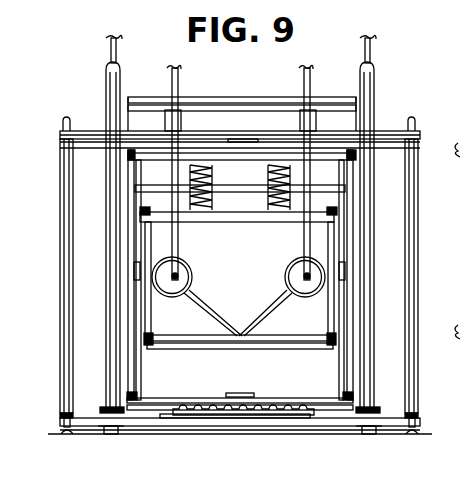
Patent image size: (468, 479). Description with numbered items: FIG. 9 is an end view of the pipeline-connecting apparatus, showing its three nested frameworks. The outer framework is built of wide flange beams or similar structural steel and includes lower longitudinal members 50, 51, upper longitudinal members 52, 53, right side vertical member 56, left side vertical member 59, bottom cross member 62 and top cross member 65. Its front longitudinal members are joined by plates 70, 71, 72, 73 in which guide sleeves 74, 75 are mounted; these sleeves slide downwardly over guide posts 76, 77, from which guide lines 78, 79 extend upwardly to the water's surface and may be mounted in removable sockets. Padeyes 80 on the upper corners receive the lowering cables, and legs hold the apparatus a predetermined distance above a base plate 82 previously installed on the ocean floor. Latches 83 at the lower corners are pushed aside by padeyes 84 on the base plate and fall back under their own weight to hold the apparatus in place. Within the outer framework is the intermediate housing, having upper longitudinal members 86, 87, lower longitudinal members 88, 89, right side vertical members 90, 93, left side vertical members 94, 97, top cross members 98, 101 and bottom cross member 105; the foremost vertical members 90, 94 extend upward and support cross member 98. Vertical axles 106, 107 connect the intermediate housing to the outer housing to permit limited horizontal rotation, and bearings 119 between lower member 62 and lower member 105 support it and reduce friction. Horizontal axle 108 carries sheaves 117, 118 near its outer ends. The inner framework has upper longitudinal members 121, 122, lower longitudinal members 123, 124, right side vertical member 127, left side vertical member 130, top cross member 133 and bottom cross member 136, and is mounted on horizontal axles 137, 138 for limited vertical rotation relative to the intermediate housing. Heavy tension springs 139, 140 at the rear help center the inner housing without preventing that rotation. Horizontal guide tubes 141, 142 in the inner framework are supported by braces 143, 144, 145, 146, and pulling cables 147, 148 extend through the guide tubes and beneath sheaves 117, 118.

The lower longitudinal member 50 is at (60, 414).
The lower longitudinal member 51 is at (419, 414).
The upper longitudinal member 52 is at (61, 136).
The upper longitudinal member 53 is at (414, 136).
The right side vertical member 56 is at (62, 212).
The left side vertical member 59 is at (417, 193).
The bottom cross member 62 is at (350, 428).
The top cross member 65 is at (376, 140).
The plate 70 is at (108, 408).
The plate 71 is at (128, 428).
The plate 72 is at (374, 408).
The plate 73 is at (379, 430).
The guide sleeve 74 is at (107, 406).
The guide sleeve 75 is at (375, 406).
The guide post 76 is at (108, 289).
The guide post 77 is at (372, 289).
The guide line 78 is at (111, 46).
The guide line 79 is at (371, 52).
The padeye 80 is at (69, 116).
The base plate 82 is at (200, 430).
The latch 83 is at (63, 422).
The padeye 84 is at (76, 432).
The upper longitudinal member 86 is at (128, 157).
The upper longitudinal member 87 is at (356, 157).
The lower longitudinal member 88 is at (135, 400).
The lower longitudinal member 89 is at (345, 400).
The right side vertical member 90 is at (140, 119).
The right side vertical member 93 is at (128, 187).
The left side vertical member 94 is at (350, 119).
The left side vertical member 97 is at (352, 180).
The top cross member 98 is at (237, 100).
The top cross member 101 is at (187, 154).
The bottom cross member 105 is at (184, 404).
The vertical axle 106 is at (267, 146).
The vertical axle 107 is at (262, 388).
The horizontal axle 108 is at (222, 190).
The sheave 117 is at (176, 240).
The sheave 118 is at (304, 240).
The bearing 119 is at (269, 418).
The upper longitudinal member 121 is at (140, 212).
The upper longitudinal member 122 is at (337, 215).
The lower longitudinal member 123 is at (152, 336).
The lower longitudinal member 124 is at (312, 338).
The right side vertical member 127 is at (145, 231).
The left side vertical member 130 is at (334, 238).
The top cross member 133 is at (252, 218).
The bottom cross member 136 is at (260, 340).
The horizontal axle 137 is at (135, 266).
The horizontal axle 138 is at (345, 266).
The tension spring 139 is at (190, 172).
The tension spring 140 is at (292, 176).
The horizontal guide tube 141 is at (186, 264).
The horizontal guide tube 142 is at (292, 264).
The brace 143 is at (185, 334).
The brace 144 is at (197, 300).
The brace 145 is at (262, 309).
The brace 146 is at (295, 334).
The pulling cable 147 is at (178, 74).
The pulling cable 148 is at (308, 82).